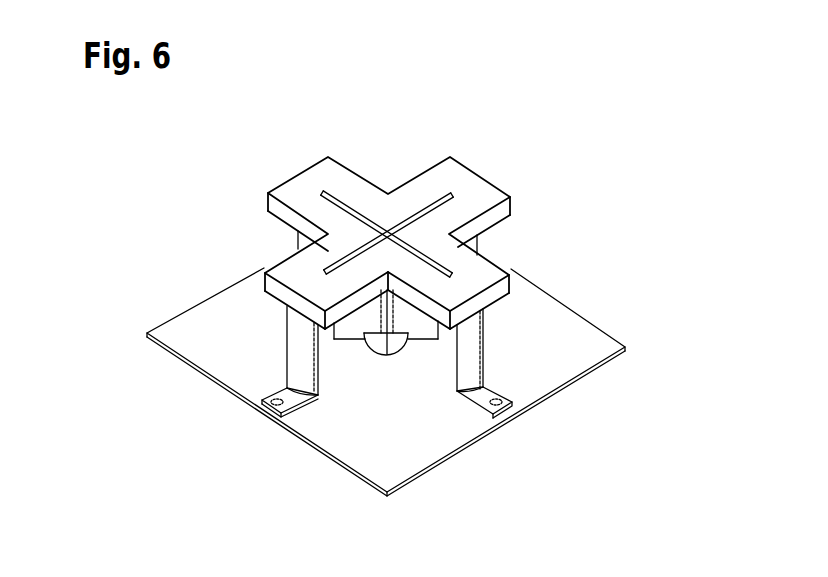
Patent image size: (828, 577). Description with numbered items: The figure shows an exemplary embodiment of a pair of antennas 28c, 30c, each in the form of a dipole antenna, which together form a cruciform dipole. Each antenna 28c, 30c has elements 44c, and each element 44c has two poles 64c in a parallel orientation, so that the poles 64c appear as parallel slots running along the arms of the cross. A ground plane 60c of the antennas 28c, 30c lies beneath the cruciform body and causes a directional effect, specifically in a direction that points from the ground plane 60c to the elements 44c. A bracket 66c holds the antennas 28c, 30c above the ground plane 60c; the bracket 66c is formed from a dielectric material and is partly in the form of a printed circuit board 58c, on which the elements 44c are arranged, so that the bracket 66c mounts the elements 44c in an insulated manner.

The antenna 28c is at (393, 252).
The antenna 30c is at (345, 208).
The printed circuit board 58c is at (291, 191).
The elements 44c is at (393, 190).
The poles 64c is at (321, 194).
The ground plane 60c is at (562, 338).
The bracket 66c is at (250, 346).